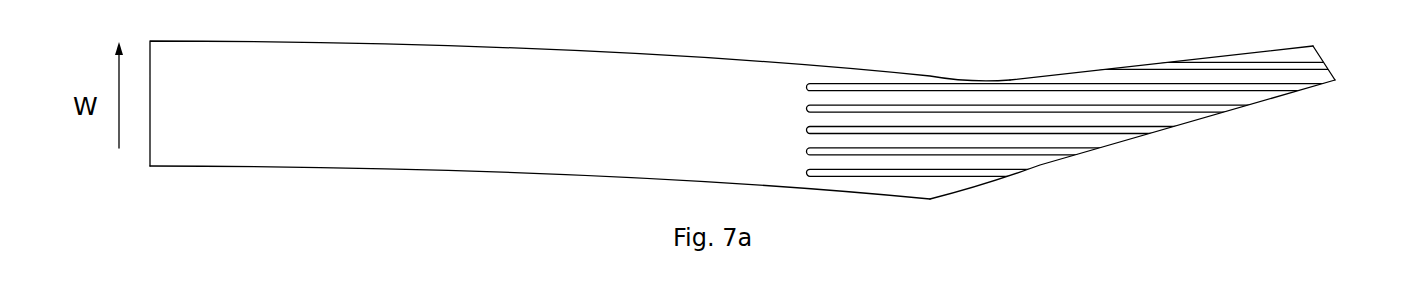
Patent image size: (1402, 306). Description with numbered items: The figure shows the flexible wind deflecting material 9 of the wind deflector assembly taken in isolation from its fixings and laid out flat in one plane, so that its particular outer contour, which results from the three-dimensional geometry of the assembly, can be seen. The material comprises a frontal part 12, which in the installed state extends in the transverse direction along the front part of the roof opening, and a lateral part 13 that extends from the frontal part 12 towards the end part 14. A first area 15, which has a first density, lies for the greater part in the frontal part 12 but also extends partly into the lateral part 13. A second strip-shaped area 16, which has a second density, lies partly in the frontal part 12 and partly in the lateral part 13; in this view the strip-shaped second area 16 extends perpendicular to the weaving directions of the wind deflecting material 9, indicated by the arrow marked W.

The flexible wind deflecting material 9 is at (225, 133).
The frontal part 12 is at (428, 132).
The lateral part 13 is at (1185, 95).
The end part 14 is at (1335, 48).
The first area 15 is at (622, 145).
The second strip-shaped area 16 is at (1015, 150).